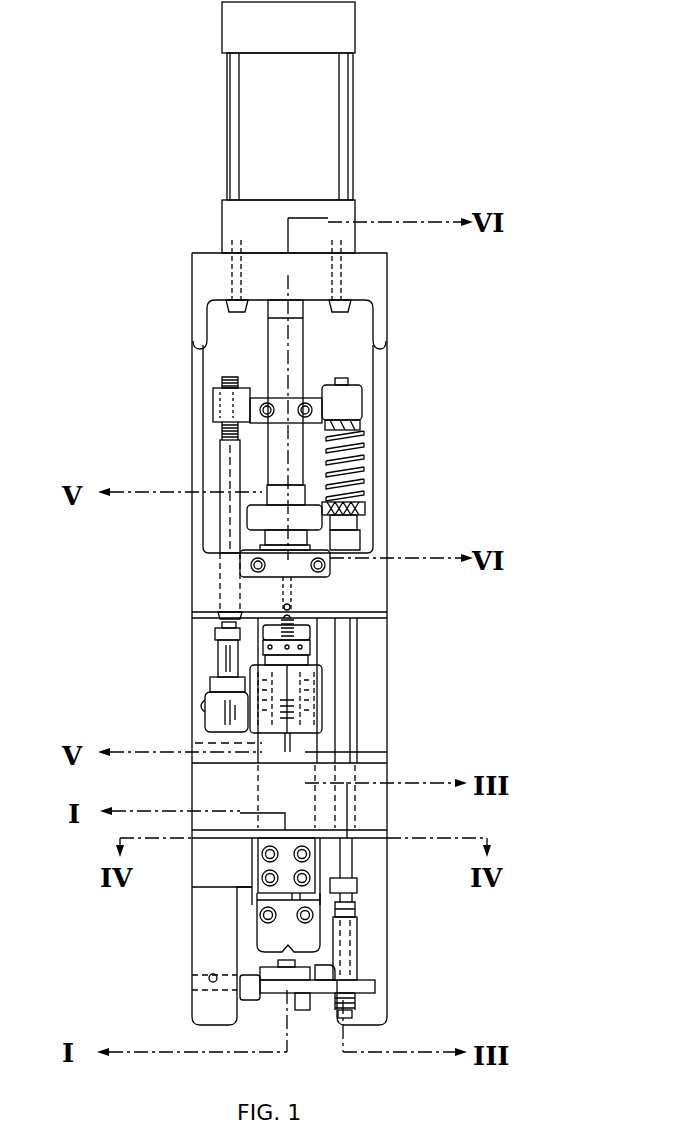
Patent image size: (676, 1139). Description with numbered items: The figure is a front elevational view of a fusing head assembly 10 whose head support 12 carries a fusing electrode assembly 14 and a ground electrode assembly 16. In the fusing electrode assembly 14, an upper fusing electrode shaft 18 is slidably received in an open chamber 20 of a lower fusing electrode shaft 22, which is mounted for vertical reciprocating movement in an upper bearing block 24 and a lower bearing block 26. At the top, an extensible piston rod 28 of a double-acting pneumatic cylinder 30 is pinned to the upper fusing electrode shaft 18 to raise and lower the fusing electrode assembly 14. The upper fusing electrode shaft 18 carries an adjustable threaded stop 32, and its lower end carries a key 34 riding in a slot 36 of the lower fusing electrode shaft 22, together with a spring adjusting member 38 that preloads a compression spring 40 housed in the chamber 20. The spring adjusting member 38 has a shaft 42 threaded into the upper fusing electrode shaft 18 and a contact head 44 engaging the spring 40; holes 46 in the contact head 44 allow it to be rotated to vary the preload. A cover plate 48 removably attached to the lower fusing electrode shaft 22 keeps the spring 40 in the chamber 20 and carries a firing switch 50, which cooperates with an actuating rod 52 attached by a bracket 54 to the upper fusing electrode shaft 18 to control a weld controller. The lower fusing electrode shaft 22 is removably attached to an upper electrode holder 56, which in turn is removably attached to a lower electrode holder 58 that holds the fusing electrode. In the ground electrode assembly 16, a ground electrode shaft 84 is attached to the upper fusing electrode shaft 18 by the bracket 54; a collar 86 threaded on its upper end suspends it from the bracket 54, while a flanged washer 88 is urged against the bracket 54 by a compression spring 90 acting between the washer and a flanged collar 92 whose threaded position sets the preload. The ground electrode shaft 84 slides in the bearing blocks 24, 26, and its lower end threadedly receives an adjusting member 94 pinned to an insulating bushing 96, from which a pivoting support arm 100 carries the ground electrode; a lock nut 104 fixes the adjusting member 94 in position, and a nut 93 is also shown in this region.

The fusing head assembly 10 is at (414, 130).
The head support 12 is at (387, 298).
The fusing electrode assembly 14 is at (242, 345).
The ground electrode assembly 16 is at (366, 708).
The upper fusing electrode shaft 18 is at (298, 368).
The open chamber 20 is at (318, 632).
The lower fusing electrode shaft 22 is at (320, 757).
The upper bearing block 24 is at (205, 582).
The lower bearing block 26 is at (210, 783).
The extensible piston rod 28 is at (283, 316).
The double-acting pneumatic cylinder 30 is at (217, 135).
The stop 32 is at (312, 520).
The key 34 is at (294, 626).
The slot 36 is at (293, 575).
The spring adjusting member 38 is at (326, 645).
The compression spring 40 is at (272, 727).
The shaft 42 is at (269, 597).
The contact head 44 is at (258, 647).
The holes 46 is at (322, 658).
The cover plate 48 is at (322, 688).
The firing switch 50 is at (215, 710).
The actuating rod 52 is at (225, 468).
The bracket 54 is at (213, 410).
The upper electrode holder 56 is at (258, 862).
The lower electrode holder 58 is at (265, 935).
The ground electrode shaft 84 is at (356, 742).
The collar 86 is at (345, 400).
The flanged washer 88 is at (360, 425).
The compression spring 90 is at (363, 460).
The flanged collar 92 is at (360, 510).
The lock nut 93 is at (368, 1005).
The adjusting member 94 is at (371, 910).
The insulating bushing 96 is at (357, 947).
The support arm 100 is at (372, 987).
The lock nut 104 is at (362, 888).